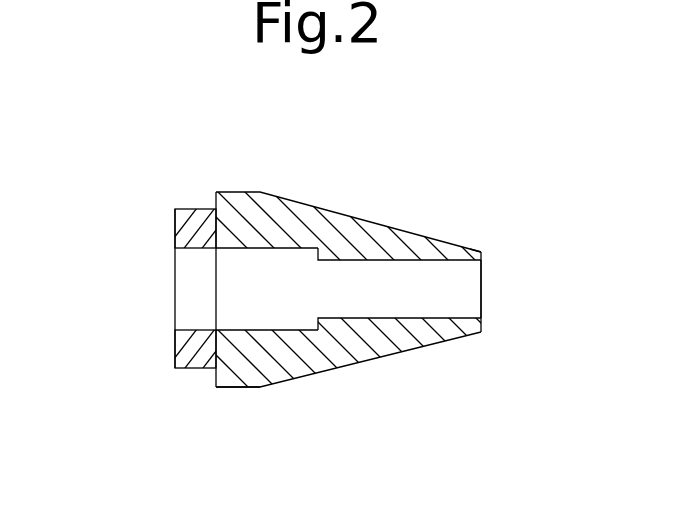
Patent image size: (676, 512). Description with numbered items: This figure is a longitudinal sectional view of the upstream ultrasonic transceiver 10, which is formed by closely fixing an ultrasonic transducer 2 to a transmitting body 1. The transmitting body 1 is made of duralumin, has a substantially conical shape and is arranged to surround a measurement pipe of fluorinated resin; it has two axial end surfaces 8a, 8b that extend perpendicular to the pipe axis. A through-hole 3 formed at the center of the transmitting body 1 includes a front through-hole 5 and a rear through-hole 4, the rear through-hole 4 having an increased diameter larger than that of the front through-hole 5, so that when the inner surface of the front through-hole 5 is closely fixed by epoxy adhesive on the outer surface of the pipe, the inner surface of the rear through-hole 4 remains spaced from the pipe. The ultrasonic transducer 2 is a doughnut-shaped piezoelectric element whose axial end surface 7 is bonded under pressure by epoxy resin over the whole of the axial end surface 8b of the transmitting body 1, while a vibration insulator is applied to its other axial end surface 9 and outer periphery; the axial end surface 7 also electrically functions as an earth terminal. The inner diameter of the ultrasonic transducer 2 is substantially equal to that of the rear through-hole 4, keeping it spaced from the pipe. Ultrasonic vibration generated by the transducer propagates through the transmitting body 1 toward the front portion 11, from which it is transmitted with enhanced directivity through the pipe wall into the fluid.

The transmitting body 1 is at (353, 222).
The ultrasonic transducer 2 is at (188, 208).
The through-hole 3 is at (290, 290).
The rear through-hole 4 is at (257, 255).
The front through-hole 5 is at (438, 268).
The axial end surface 7 is at (216, 192).
The axial end surface 8a is at (482, 253).
The axial end surface 8b is at (214, 378).
The axial end surface 9 is at (175, 225).
The upstream ultrasonic transceiver 10 is at (275, 148).
The front portion 11 is at (433, 333).